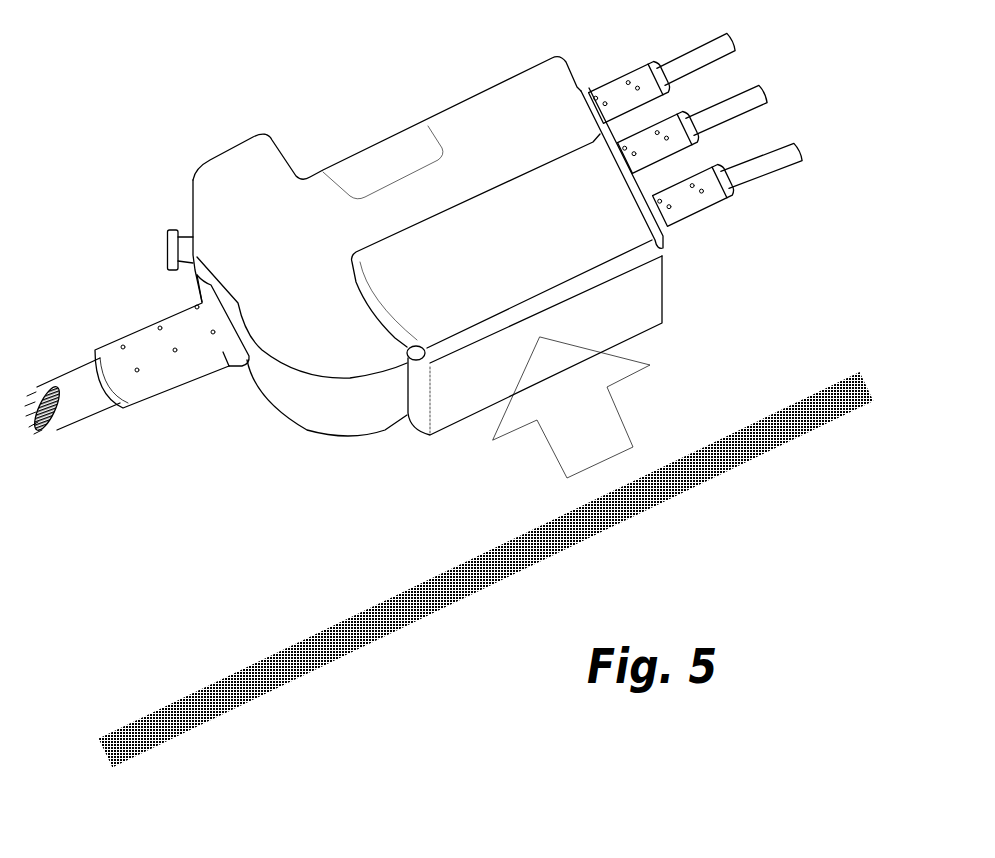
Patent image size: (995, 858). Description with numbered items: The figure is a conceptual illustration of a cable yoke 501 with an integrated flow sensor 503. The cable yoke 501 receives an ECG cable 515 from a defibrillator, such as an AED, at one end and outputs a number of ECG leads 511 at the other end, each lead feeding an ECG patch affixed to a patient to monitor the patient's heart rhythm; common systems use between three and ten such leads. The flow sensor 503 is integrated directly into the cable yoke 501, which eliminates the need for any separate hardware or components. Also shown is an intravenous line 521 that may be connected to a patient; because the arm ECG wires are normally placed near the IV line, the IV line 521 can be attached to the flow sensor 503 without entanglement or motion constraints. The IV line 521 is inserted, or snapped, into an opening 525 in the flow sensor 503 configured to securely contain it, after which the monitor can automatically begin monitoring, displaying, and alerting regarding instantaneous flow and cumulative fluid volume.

The cable yoke 501 is at (191, 124).
The flow sensor 503 is at (663, 323).
The ECG leads 511 is at (778, 205).
The ECG cable 515 is at (80, 421).
The intravenous line 521 is at (757, 456).
The opening 525 is at (662, 247).